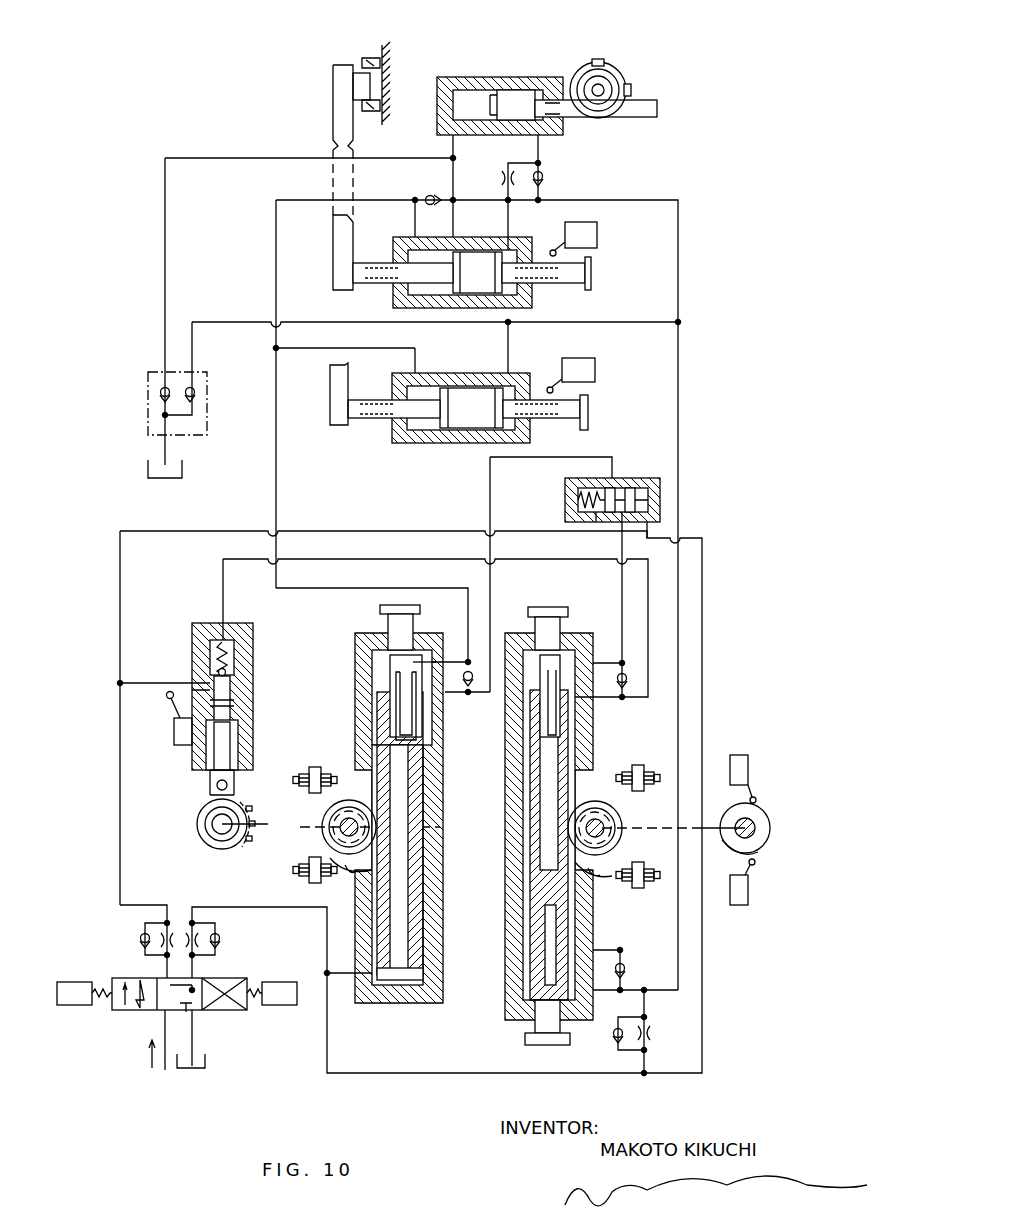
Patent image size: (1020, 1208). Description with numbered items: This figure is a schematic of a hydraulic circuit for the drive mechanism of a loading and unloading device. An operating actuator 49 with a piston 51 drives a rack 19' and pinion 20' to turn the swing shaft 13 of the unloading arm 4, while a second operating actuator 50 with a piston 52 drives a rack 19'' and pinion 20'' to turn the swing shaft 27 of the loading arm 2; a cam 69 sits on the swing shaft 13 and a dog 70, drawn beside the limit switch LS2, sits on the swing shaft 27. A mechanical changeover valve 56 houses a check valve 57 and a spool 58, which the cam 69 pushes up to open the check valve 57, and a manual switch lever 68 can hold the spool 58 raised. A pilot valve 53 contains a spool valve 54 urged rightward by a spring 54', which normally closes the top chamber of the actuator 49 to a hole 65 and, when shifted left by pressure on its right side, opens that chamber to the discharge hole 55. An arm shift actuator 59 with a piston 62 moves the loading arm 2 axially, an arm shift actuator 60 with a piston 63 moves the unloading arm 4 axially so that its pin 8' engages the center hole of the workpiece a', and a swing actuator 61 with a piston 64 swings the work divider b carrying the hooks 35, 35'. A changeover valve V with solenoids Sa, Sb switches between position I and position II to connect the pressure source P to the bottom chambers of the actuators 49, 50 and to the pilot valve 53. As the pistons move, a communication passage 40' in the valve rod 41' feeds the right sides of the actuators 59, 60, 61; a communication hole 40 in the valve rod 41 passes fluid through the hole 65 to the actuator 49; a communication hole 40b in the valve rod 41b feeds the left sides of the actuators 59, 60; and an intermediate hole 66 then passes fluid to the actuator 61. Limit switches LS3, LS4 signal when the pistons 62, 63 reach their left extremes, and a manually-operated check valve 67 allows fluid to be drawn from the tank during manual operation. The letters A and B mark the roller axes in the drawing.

The loading arm 2 is at (338, 382).
The unloading arm 4 is at (326, 135).
The pin 8' is at (333, 83).
The workpiece a' is at (348, 36).
The swing shaft 13 is at (349, 812).
The rack 19' is at (350, 882).
The rack 19'' is at (604, 885).
The pinion 20' is at (324, 827).
The pinion 20'' is at (611, 797).
The swing shaft 27 is at (600, 830).
The hook 35 is at (598, 64).
The hook 35' is at (616, 92).
The work divider b is at (627, 72).
The communication hole 40 is at (585, 696).
The communication passage 40' is at (588, 945).
The communication hole 40b is at (400, 706).
The valve rod 41 is at (459, 690).
The valve rod 41' is at (507, 811).
The valve rod 41b is at (376, 690).
The operating actuator 49 is at (432, 868).
The operating actuator 50 is at (512, 895).
The piston 51 is at (420, 775).
The piston 52 is at (520, 802).
The pilot valve 53 is at (565, 490).
The spool valve 54 is at (648, 474).
The spring 54' is at (613, 468).
The discharge hole 55 is at (594, 524).
The mechanical changeover valve 56 is at (253, 680).
The check valve 57 is at (212, 672).
The spool 58 is at (240, 748).
The arm shift actuator 59 is at (427, 443).
The arm shift actuator 60 is at (393, 297).
The swing actuator 61 is at (470, 77).
The piston 62 is at (470, 400).
The piston 63 is at (487, 262).
The piston 64 is at (514, 100).
The hole 65 is at (622, 526).
The intermediate hole 66 is at (459, 250).
The manually-operated check valve 67 is at (148, 413).
The manual switch lever 68 is at (178, 722).
The cam 69 is at (256, 848).
The dog 70 is at (726, 860).
The limit switch LS2 is at (748, 762).
The limit switch LS3 is at (595, 372).
The limit switch LS4 is at (597, 235).
The changeover valve V is at (214, 982).
The solenoid Sa is at (84, 993).
The solenoid Sb is at (272, 993).
The position I is at (130, 1025).
The position II is at (227, 1025).
The pressure source P is at (151, 1070).
The roller A is at (284, 815).
The roller B is at (652, 815).